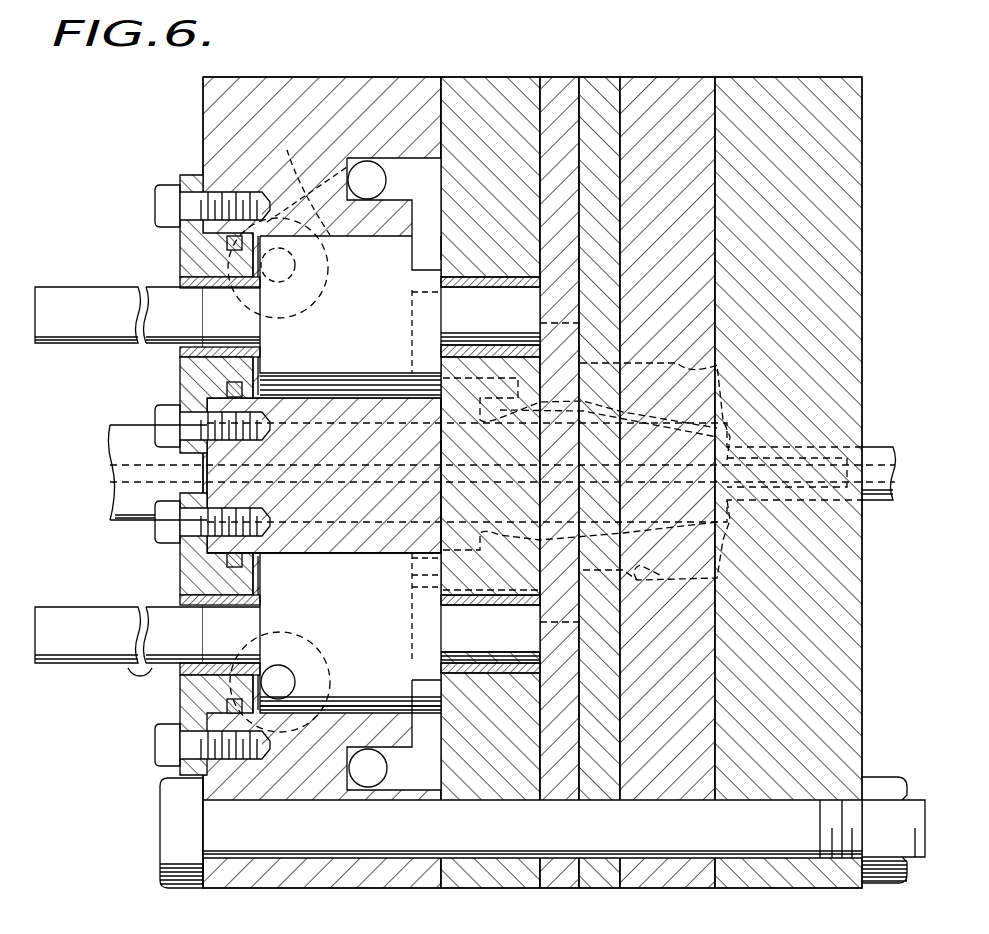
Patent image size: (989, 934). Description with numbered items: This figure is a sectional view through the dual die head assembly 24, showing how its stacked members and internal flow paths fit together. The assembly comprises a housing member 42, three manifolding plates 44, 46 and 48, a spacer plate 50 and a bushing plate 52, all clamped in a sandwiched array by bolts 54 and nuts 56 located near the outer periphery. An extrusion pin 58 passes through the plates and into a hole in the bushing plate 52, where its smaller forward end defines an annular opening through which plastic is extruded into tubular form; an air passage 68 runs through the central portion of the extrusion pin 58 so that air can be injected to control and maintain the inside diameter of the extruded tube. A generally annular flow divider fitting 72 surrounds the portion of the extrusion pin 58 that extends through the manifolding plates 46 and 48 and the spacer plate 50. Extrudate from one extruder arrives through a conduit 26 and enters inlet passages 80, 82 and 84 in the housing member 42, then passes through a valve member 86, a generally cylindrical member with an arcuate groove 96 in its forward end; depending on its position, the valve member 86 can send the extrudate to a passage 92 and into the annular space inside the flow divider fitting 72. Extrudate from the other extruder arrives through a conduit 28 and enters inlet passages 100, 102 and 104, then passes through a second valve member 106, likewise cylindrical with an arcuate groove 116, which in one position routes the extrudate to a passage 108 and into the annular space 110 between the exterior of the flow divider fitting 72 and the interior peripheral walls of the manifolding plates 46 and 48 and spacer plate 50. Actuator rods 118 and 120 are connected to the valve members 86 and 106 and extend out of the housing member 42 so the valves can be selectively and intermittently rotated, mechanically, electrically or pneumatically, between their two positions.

The dual die head assembly 24 is at (852, 60).
The conduit 26 is at (318, 302).
The conduit 28 is at (313, 642).
The housing member 42 is at (340, 80).
The manifolding plate 44 is at (470, 85).
The manifolding plate 46 is at (552, 85).
The manifolding plate 48 is at (600, 85).
The spacer plate 50 is at (675, 85).
The bushing plate 52 is at (775, 85).
The bolts 54 is at (798, 850).
The nuts 56 is at (890, 875).
The extrusion pin 58 is at (135, 523).
The air passage 68 is at (130, 485).
The flow divider fitting 72 is at (716, 350).
The inlet passage 80 is at (225, 258).
The inlet passage 82 is at (320, 190).
The inlet passage 84 is at (400, 165).
The valve member 86 is at (205, 370).
The passage 92 is at (400, 420).
The arcuate groove 96 is at (433, 243).
The inlet passage 100 is at (300, 687).
The inlet passage 102 is at (347, 778).
The inlet passage 104 is at (433, 745).
The valve member 106 is at (373, 560).
The passage 108 is at (412, 573).
The annular space 110 is at (627, 575).
The arcuate groove 116 is at (433, 702).
The actuator rod 118 is at (73, 325).
The actuator rod 120 is at (112, 667).